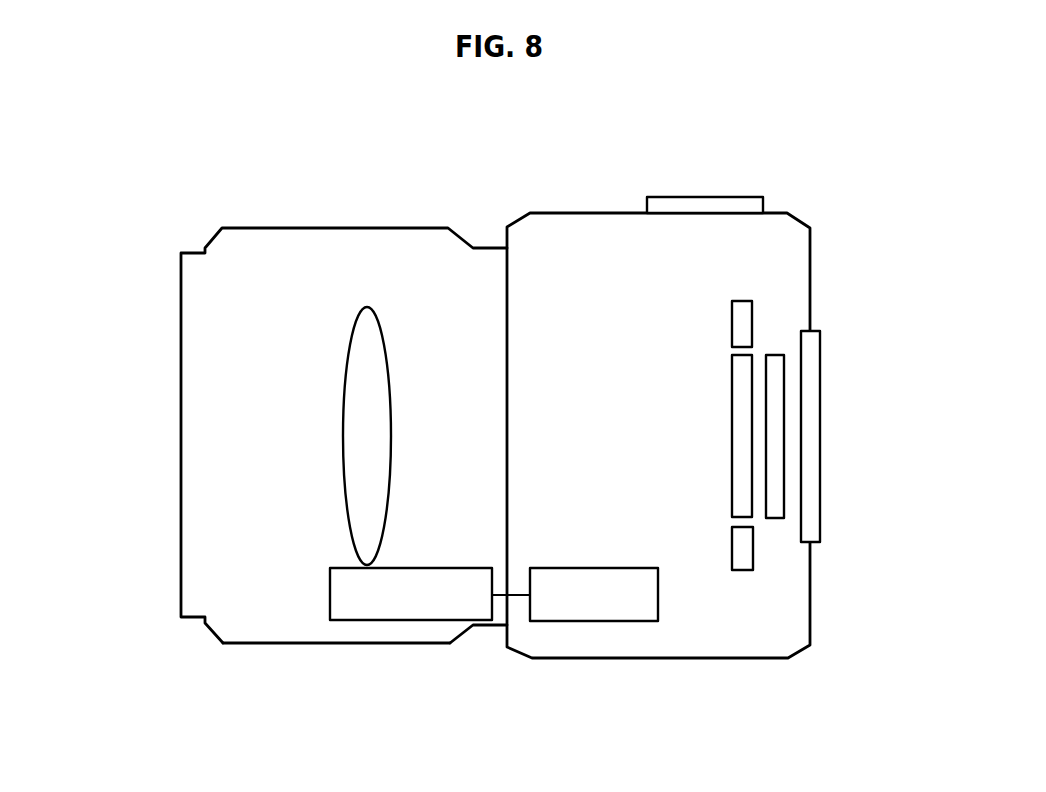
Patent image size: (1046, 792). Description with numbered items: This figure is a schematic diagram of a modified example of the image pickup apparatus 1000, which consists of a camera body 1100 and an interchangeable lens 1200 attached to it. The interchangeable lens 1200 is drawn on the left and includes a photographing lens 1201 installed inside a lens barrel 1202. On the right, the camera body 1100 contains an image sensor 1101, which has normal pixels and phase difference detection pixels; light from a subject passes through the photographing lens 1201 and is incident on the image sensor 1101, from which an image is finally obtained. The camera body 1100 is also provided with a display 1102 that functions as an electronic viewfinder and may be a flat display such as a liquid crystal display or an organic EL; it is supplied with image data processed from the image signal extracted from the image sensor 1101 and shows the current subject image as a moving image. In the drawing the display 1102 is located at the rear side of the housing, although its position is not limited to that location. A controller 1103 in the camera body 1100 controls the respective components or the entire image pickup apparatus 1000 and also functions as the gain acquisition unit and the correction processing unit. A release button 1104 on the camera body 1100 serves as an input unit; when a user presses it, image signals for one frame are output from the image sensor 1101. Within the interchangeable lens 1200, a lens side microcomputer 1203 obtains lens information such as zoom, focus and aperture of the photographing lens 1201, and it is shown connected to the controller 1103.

The image pickup apparatus 1000 is at (542, 142).
The camera body 1100 is at (802, 222).
The image sensor 1101 is at (775, 520).
The display 1102 is at (820, 375).
The controller 1103 is at (587, 621).
The release button 1104 is at (730, 197).
The interchangeable lens 1200 is at (188, 208).
The photographing lens 1201 is at (348, 357).
The lens barrel 1202 is at (293, 643).
The lens side microcomputer 1203 is at (427, 620).